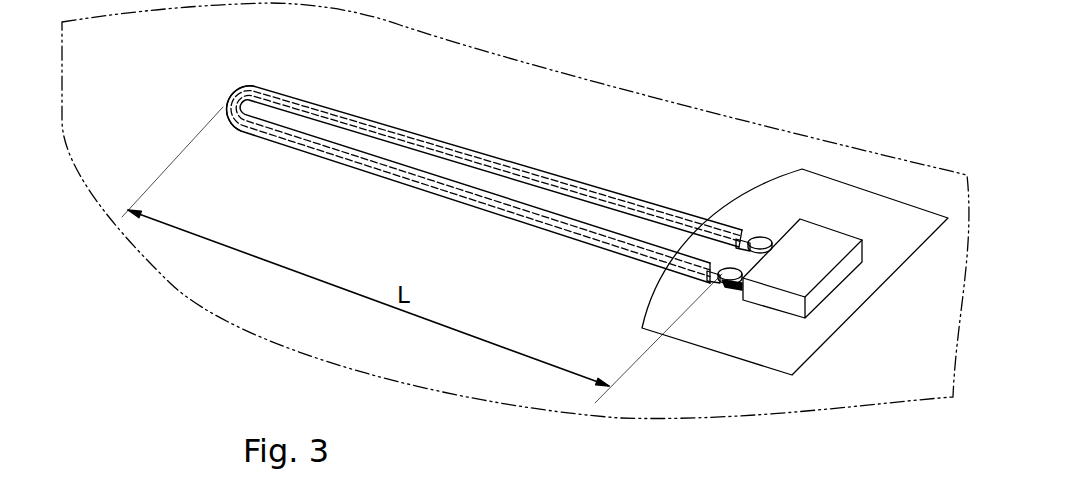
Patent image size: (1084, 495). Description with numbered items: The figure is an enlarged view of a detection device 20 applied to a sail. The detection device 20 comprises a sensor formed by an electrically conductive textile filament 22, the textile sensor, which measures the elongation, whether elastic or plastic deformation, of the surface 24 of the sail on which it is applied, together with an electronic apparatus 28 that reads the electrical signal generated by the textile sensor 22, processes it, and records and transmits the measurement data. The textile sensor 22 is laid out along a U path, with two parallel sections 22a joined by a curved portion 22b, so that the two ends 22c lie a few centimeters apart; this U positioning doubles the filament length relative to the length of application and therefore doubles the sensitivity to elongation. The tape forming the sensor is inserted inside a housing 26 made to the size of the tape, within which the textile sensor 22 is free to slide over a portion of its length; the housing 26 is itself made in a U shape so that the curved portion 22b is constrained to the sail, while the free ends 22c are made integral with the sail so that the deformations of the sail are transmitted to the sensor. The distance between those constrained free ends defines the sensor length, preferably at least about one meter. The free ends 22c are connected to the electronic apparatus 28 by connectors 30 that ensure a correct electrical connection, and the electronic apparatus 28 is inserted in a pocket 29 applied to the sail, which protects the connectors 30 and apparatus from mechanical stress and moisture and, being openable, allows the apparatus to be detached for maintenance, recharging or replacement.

The detection device 20 is at (364, 96).
The electrically conductive textile filament 22 is at (424, 199).
The parallel sections 22a is at (630, 199).
The curved portion 22b is at (234, 90).
The ends 22c is at (745, 237).
The surface 24 is at (297, 323).
The housing 26 is at (460, 145).
The electronic apparatus 28 is at (815, 247).
The pocket 29 is at (813, 338).
The connectors 30 is at (760, 237).